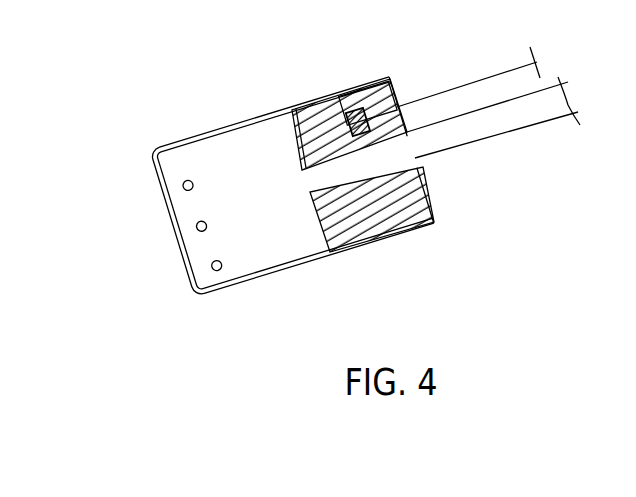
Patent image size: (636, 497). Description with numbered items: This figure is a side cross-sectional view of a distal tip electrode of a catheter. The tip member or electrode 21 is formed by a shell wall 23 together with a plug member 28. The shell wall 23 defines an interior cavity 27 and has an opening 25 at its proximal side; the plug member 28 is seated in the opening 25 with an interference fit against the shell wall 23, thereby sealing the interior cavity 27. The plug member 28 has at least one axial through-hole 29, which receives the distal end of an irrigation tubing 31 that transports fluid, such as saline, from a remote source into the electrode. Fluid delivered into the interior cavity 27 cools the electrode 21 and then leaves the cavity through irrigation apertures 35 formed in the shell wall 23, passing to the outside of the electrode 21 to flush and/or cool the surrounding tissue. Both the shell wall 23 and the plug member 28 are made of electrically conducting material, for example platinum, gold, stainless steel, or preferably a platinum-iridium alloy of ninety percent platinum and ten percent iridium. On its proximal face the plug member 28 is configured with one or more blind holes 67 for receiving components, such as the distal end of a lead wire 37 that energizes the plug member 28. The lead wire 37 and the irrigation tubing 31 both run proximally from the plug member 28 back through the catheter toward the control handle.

The tip member or electrode 21 is at (202, 132).
The shell wall 23 is at (378, 207).
The opening 25 is at (398, 84).
The interior cavity 27 is at (282, 213).
The plug member 28 is at (437, 190).
The axial through-hole 29 is at (292, 110).
The irrigation tubing 31 is at (558, 80).
The irrigation apertures 35 is at (213, 265).
The lead wire 37 is at (492, 72).
The blind holes 67 is at (363, 90).